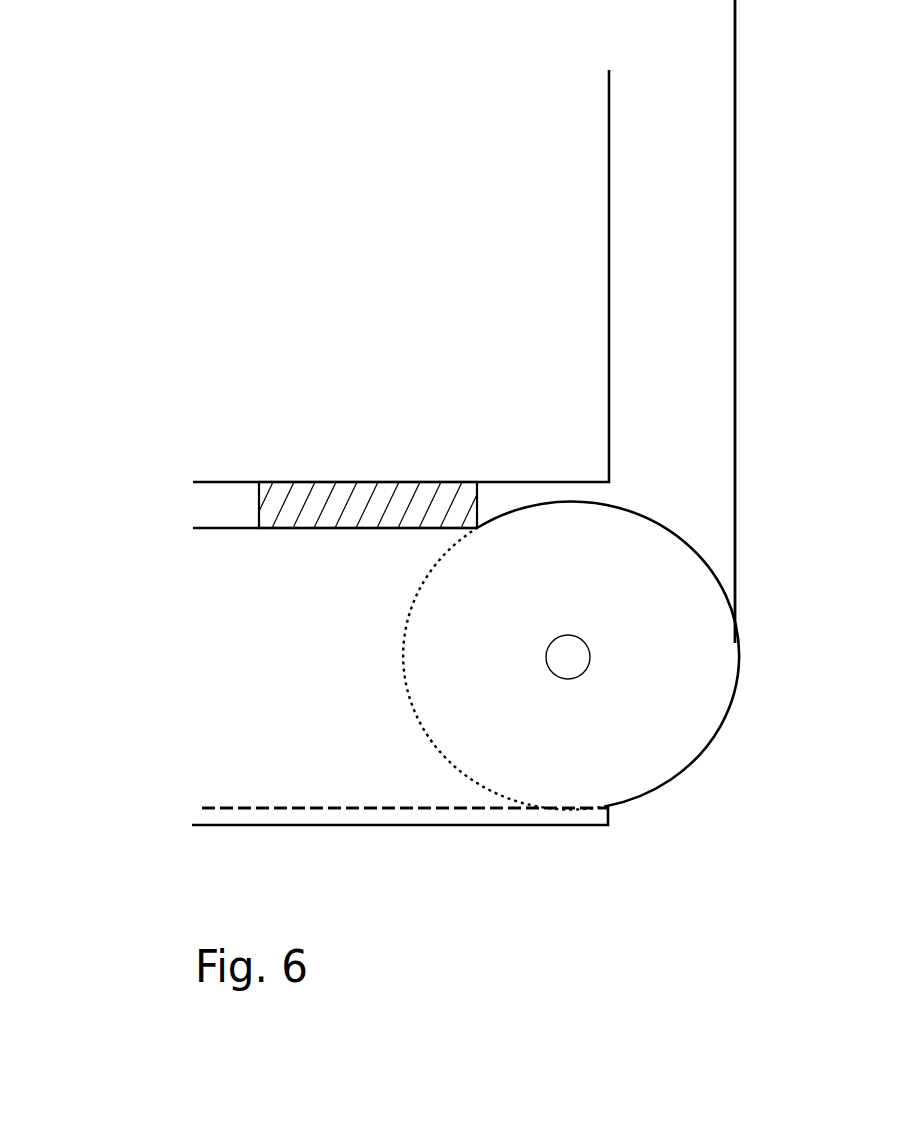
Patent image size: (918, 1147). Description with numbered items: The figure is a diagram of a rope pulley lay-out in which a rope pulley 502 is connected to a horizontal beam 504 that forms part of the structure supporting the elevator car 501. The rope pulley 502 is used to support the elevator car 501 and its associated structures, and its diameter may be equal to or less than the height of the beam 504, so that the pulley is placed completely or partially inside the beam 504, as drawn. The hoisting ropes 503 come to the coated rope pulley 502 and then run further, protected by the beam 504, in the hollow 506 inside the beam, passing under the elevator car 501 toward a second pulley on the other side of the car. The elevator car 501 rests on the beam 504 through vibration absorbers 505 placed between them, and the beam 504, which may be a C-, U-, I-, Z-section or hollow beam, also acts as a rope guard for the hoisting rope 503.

The elevator car 501 is at (583, 245).
The rope pulley 502 is at (650, 777).
The hoisting ropes 503 is at (738, 347).
The horizontal beam 504 is at (332, 750).
The vibration absorbers 505 is at (278, 518).
The hollow 506 is at (302, 822).